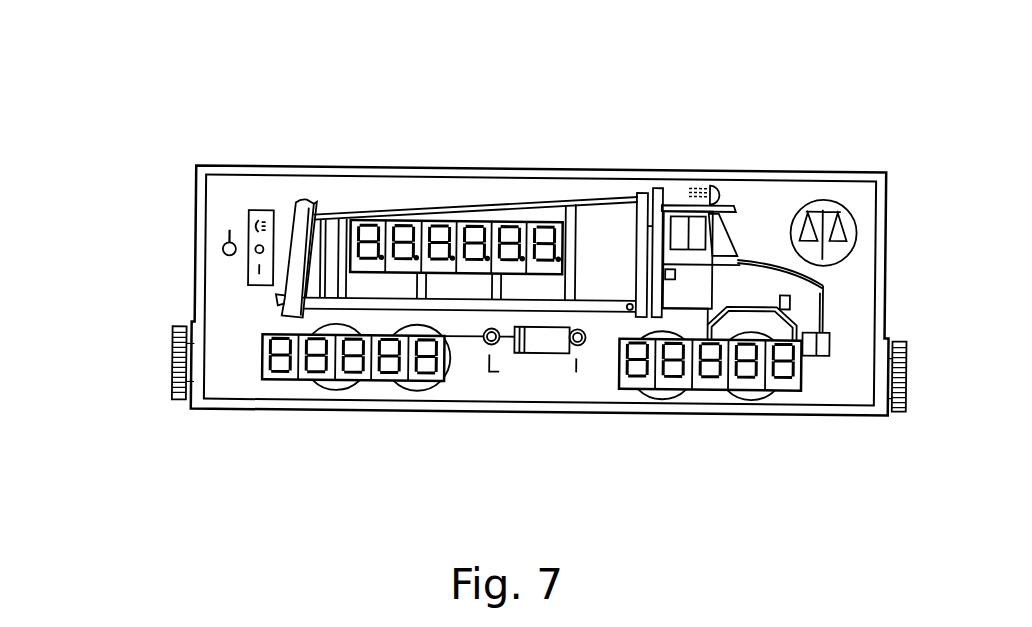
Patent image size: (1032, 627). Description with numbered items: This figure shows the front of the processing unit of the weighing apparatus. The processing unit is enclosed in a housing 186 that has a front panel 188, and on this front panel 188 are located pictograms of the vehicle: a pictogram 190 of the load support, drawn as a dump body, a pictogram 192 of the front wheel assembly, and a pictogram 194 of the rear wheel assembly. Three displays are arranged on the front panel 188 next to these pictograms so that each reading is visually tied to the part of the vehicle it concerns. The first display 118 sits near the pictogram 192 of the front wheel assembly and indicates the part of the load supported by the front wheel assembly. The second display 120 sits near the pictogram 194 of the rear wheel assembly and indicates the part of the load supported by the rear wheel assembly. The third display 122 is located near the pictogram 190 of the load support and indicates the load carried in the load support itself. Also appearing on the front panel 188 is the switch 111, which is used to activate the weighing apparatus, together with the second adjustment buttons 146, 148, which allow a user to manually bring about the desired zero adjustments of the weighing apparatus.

The switch 111 is at (212, 248).
The first display 118 is at (753, 380).
The second display 120 is at (352, 382).
The third display 122 is at (421, 222).
The second adjustment button 146 is at (500, 352).
The second adjustment button 148 is at (586, 352).
The housing 186 is at (668, 154).
The front panel 188 is at (862, 190).
The pictogram of the load support 190 is at (598, 222).
The pictogram of the front wheel assembly 192 is at (672, 392).
The pictogram of the rear wheel assembly 194 is at (410, 386).